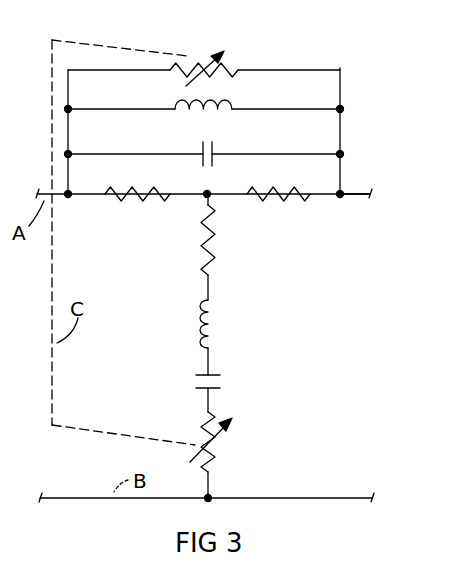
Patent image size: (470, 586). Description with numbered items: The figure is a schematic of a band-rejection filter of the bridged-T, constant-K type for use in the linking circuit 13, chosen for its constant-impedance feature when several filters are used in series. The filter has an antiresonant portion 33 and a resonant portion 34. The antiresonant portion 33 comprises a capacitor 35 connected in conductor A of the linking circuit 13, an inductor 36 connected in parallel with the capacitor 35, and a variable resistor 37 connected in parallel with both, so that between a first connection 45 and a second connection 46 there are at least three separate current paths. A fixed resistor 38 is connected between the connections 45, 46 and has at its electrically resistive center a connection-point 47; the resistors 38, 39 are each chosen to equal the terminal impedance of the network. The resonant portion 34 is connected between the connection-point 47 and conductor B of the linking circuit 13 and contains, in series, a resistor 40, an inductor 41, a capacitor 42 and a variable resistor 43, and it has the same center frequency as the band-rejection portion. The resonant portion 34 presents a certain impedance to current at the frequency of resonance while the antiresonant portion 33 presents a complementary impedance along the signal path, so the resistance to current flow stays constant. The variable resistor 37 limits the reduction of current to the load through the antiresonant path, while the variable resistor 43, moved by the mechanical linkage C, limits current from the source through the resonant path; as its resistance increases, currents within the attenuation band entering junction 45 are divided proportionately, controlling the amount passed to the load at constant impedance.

The linking circuit 13 is at (360, 183).
The antiresonant portion 33 is at (204, 107).
The resonant portion 34 is at (226, 348).
The capacitor 35 is at (216, 160).
The inductor 36 is at (215, 118).
The variable resistor 37 is at (217, 79).
The fixed resistor 38 is at (143, 201).
The resistor 39 is at (283, 201).
The resistor 40 is at (198, 251).
The inductor 41 is at (213, 322).
The capacitor 42 is at (201, 372).
The variable resistor 43 is at (214, 459).
The first connection 45 is at (72, 198).
The second connection 46 is at (343, 198).
The connection-point 47 is at (210, 198).